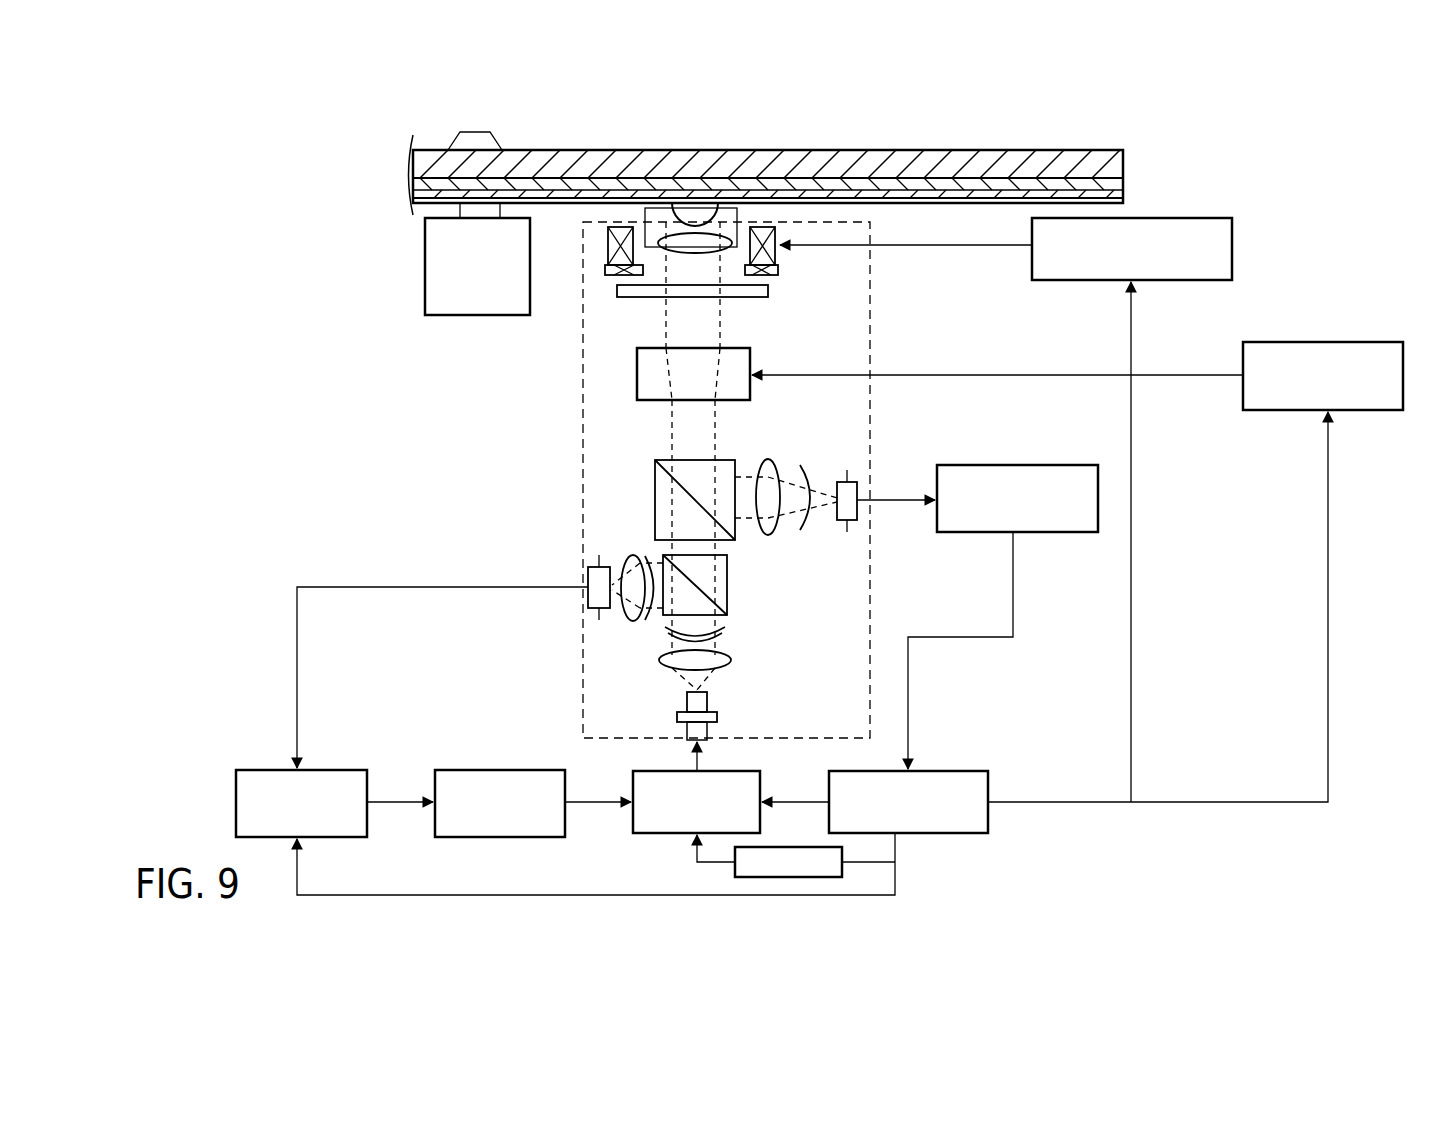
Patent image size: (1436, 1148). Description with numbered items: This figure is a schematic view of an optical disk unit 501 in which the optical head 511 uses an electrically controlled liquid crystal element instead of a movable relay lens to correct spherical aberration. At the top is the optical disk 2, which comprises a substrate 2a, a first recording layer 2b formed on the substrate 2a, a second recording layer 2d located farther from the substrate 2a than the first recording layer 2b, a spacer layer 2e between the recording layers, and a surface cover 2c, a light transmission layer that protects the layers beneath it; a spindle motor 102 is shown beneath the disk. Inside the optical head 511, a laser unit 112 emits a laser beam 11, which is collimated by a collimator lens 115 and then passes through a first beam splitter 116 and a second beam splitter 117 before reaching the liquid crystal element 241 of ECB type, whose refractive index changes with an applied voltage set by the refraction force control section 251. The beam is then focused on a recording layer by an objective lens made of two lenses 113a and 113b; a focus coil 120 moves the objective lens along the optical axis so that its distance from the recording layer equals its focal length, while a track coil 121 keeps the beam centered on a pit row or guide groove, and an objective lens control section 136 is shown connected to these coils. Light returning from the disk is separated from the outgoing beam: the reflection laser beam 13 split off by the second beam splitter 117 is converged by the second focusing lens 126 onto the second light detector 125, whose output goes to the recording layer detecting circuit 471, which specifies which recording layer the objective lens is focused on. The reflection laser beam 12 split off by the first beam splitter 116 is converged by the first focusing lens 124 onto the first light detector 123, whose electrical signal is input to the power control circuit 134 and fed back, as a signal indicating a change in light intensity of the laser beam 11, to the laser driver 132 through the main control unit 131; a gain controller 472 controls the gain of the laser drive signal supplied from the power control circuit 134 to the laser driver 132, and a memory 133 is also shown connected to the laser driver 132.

The optical disk 2 is at (590, 150).
The substrate 2a is at (1077, 152).
The first recording layer 2b is at (878, 193).
The surface cover (light transmission layer) 2c is at (798, 160).
The second recording layer 2d is at (848, 198).
The spacer layer 2e is at (1125, 184).
The spindle motor 102 is at (470, 317).
The optical head 511 is at (770, 740).
The lens 113a is at (712, 216).
The lens 113b is at (707, 252).
The focus coil 120 is at (612, 246).
The track coil 121 is at (620, 274).
The liquid crystal element 241 is at (637, 372).
The second beam splitter 117 is at (655, 500).
The second focusing lens 126 is at (772, 530).
The reflection laser beam 13 is at (812, 530).
The second light detector 125 is at (847, 470).
The first beam splitter 116 is at (727, 598).
The first focusing lens 124 is at (630, 560).
The reflection laser beam 12 is at (648, 620).
The first light detector 123 is at (588, 575).
The laser beam 11 is at (727, 633).
The collimator lens 115 is at (727, 665).
The laser unit 112 is at (687, 701).
The objective lens control section 136 is at (1234, 240).
The optical disk unit 501 is at (1280, 315).
The refraction force control section 251 is at (1385, 412).
The recording layer detecting circuit 471 is at (1013, 465).
The power control circuit 134 is at (332, 770).
The gain controller 472 is at (497, 770).
The laser driver 132 is at (633, 790).
The main control unit 131 is at (963, 771).
The memory 133 is at (735, 876).